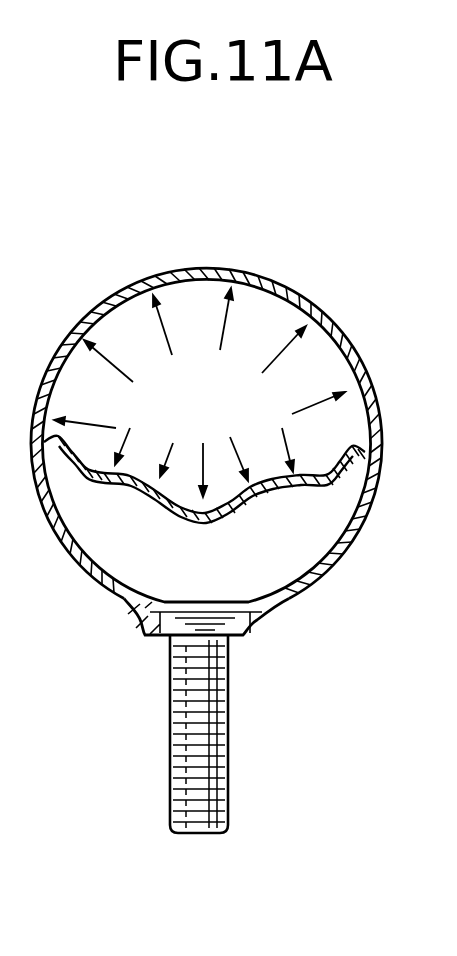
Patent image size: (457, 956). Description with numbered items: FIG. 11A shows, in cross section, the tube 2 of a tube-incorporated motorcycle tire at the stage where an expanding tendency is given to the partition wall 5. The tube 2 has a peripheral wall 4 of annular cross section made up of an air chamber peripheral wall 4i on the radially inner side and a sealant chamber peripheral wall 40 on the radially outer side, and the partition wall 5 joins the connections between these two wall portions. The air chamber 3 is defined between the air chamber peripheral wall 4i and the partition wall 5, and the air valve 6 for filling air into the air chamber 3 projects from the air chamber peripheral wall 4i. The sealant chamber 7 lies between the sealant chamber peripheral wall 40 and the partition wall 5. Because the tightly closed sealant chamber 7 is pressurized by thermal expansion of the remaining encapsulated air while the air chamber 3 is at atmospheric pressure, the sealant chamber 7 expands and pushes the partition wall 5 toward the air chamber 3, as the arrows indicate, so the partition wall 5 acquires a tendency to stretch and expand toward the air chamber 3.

The tube 2 is at (343, 318).
The air chamber 3 is at (192, 580).
The peripheral wall 4 is at (88, 313).
The sealant chamber peripheral wall 40 is at (199, 268).
The air chamber peripheral wall 4i is at (307, 580).
The partition wall 5 is at (240, 508).
The air valve 6 is at (220, 813).
The sealant chamber 7 is at (184, 413).